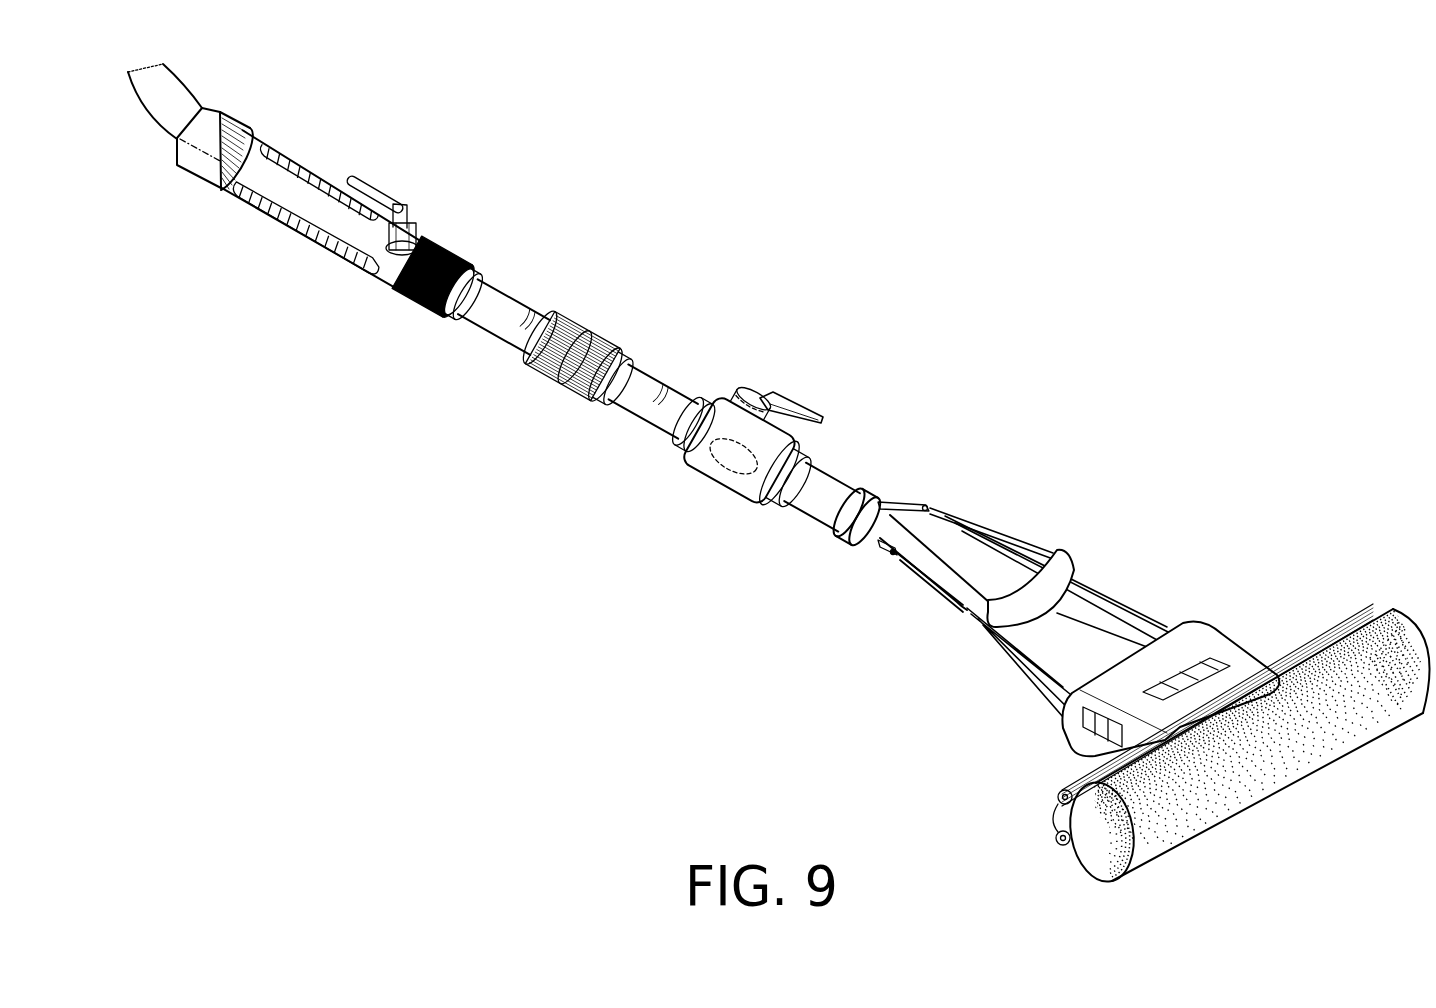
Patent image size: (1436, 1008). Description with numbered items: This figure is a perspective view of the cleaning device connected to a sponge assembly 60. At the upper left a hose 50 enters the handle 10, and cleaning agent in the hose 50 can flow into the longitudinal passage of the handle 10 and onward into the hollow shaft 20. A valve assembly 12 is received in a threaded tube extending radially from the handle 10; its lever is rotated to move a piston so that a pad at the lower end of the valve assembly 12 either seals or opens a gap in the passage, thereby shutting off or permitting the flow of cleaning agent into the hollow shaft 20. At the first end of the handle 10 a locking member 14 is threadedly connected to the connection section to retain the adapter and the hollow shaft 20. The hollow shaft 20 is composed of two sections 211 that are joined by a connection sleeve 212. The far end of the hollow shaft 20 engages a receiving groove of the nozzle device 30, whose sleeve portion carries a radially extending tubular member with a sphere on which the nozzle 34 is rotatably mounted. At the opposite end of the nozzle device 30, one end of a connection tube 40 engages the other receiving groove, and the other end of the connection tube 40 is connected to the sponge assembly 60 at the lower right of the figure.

The hose 50 is at (190, 100).
The handle 10 is at (299, 244).
The valve assembly 12 is at (411, 195).
The locking member 14 is at (462, 256).
The hollow shaft 20 is at (578, 372).
The sections 211 is at (481, 323).
The connection sleeve 212 is at (610, 347).
The nozzle device 30 is at (719, 500).
The nozzle 34 is at (803, 413).
The connection tube 40 is at (852, 483).
The sponge assembly 60 is at (1258, 640).